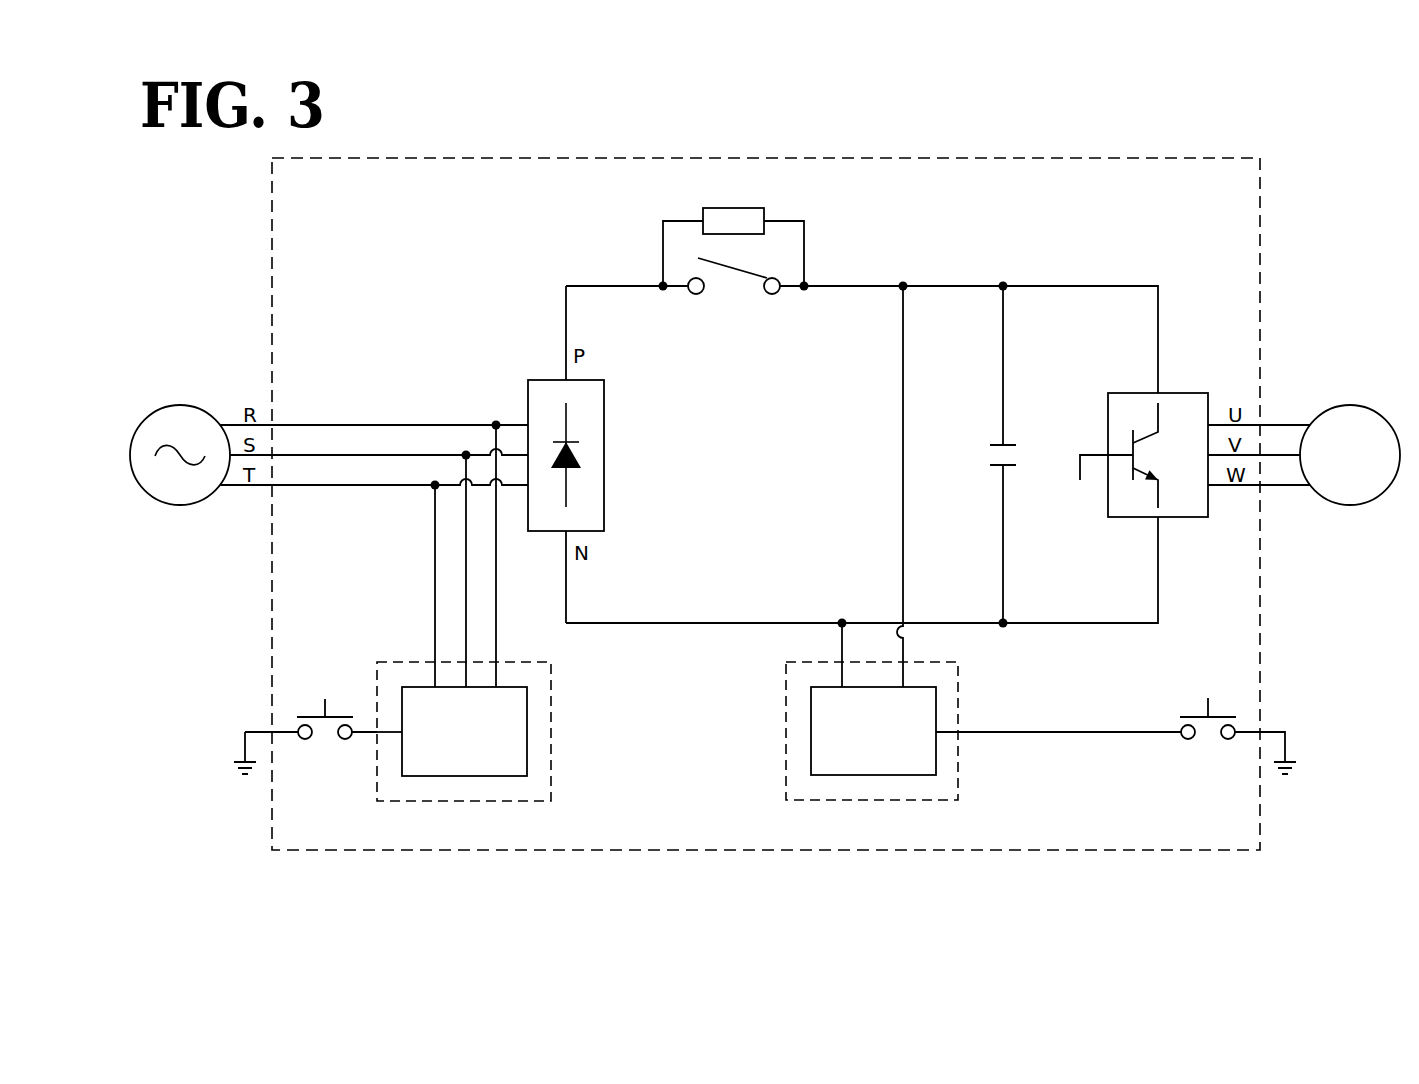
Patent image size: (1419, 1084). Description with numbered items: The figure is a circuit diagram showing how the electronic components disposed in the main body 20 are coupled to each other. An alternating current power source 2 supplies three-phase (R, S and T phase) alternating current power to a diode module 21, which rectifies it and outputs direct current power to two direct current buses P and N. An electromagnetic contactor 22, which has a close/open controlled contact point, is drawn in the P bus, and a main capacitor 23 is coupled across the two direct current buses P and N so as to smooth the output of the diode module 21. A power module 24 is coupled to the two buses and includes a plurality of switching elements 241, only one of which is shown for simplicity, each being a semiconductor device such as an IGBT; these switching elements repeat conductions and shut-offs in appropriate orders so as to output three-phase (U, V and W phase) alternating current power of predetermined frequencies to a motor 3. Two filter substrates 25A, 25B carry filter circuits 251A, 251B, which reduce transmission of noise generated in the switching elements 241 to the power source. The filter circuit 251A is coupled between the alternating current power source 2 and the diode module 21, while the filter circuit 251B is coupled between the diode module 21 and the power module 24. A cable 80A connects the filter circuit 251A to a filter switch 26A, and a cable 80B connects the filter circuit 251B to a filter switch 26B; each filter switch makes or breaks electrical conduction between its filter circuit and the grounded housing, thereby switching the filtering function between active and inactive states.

The alternating current power source 2 is at (180, 412).
The motor 3 is at (1350, 412).
The main body 20 is at (1261, 178).
The diode module 21 is at (604, 455).
The electromagnetic contactor 22 is at (733, 315).
The main capacitor 23 is at (1002, 445).
The power module 24 is at (1126, 435).
The switching element 241 is at (1133, 470).
The filter substrate 25A is at (523, 781).
The filter substrate 25B is at (812, 782).
The filter circuit 251A is at (466, 777).
The filter circuit 251B is at (877, 777).
The filter switch 26A is at (324, 752).
The filter switch 26B is at (1208, 752).
The cable 80A is at (365, 728).
The cable 80B is at (1075, 729).